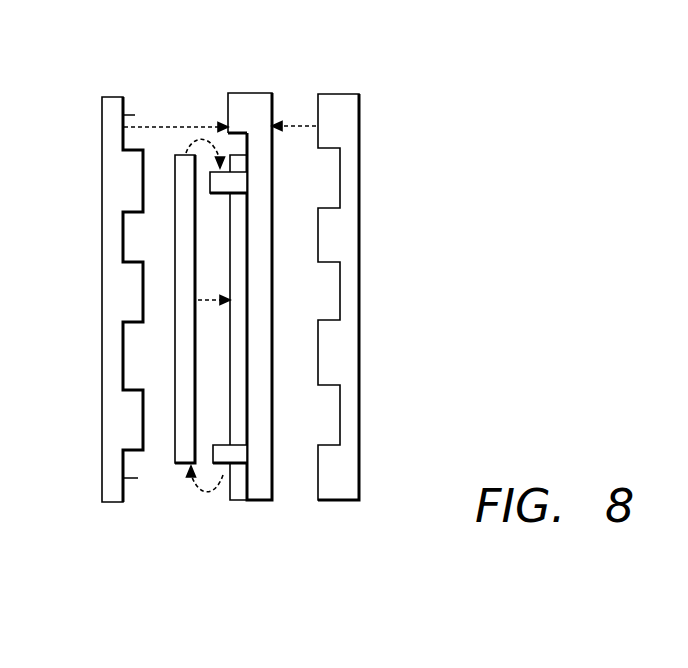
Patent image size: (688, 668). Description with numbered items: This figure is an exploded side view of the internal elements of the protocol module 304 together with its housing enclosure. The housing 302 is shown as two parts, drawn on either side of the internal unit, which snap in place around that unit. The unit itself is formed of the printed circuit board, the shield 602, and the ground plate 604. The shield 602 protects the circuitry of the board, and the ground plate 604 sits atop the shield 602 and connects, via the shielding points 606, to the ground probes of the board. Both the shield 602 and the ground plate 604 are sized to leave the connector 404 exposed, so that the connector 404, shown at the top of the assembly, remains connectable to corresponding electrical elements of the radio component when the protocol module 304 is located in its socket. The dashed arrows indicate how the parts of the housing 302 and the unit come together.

The housing 302 is at (112, 93).
The connector 404 is at (227, 110).
The protocol module 304 is at (259, 502).
The shield 602 is at (239, 502).
The ground plate 604 is at (182, 466).
The shielding points 606 is at (218, 466).